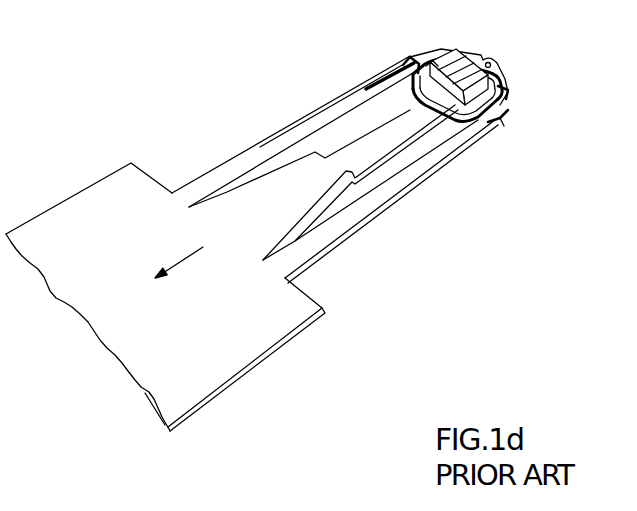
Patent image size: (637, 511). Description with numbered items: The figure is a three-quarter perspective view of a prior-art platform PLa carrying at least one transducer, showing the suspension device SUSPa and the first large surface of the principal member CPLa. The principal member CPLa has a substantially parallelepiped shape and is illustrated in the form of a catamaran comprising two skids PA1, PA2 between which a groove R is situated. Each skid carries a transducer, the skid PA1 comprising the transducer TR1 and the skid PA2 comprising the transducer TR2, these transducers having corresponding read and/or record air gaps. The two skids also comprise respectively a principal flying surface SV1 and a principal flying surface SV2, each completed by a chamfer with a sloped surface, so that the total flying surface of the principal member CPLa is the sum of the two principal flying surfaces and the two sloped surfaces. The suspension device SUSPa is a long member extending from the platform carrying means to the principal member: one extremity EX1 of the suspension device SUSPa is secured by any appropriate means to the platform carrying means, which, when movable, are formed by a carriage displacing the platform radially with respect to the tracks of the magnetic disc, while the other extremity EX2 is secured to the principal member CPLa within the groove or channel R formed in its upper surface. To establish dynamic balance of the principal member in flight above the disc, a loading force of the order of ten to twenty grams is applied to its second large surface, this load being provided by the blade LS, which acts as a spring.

The platform PLa is at (257, 275).
The suspension device SUSPa is at (293, 131).
The blade LS is at (386, 146).
The extremity of the suspension device EX1 is at (186, 271).
The other extremity of the suspension device EX2 is at (437, 108).
The transducer TR1 is at (490, 122).
The transducer TR2 is at (506, 102).
The principal member CPLa is at (455, 62).
The skid PA1 is at (398, 60).
The skid PA2 is at (510, 90).
The principal flying surface SV1 is at (428, 60).
The principal flying surface SV2 is at (500, 72).
The groove R is at (505, 124).